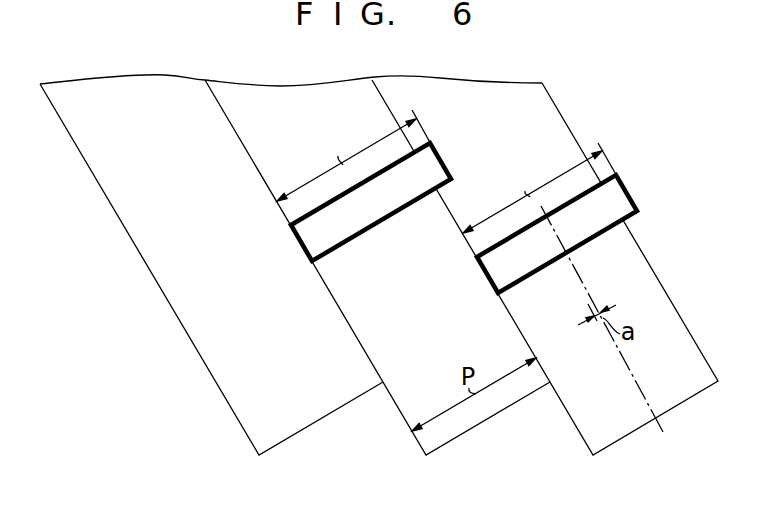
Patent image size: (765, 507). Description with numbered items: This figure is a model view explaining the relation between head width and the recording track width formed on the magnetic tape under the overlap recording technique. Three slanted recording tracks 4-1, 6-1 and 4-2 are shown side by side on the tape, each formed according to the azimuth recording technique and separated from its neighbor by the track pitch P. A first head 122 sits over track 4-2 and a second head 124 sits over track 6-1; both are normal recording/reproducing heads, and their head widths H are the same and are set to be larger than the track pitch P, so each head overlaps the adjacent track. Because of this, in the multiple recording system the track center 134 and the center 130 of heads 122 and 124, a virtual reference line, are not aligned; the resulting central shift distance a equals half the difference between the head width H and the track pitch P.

The recording track 4-1 is at (280, 443).
The recording track 6-1 is at (453, 439).
The recording track 4-2 is at (614, 437).
The second head 124 is at (395, 217).
The first head 122 is at (637, 196).
The center of heads 130 is at (582, 271).
The track center 134 is at (649, 405).